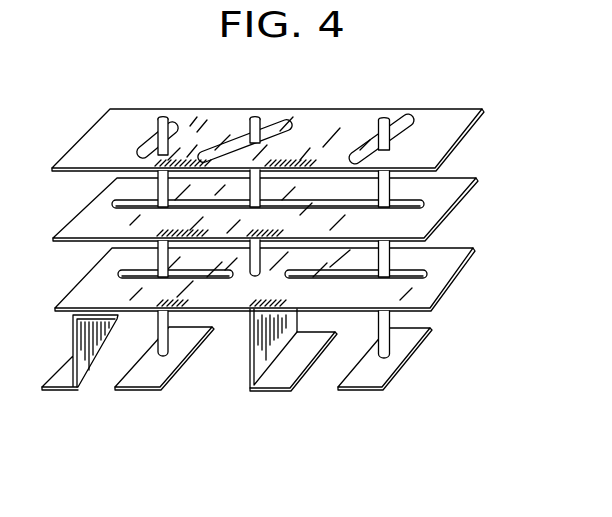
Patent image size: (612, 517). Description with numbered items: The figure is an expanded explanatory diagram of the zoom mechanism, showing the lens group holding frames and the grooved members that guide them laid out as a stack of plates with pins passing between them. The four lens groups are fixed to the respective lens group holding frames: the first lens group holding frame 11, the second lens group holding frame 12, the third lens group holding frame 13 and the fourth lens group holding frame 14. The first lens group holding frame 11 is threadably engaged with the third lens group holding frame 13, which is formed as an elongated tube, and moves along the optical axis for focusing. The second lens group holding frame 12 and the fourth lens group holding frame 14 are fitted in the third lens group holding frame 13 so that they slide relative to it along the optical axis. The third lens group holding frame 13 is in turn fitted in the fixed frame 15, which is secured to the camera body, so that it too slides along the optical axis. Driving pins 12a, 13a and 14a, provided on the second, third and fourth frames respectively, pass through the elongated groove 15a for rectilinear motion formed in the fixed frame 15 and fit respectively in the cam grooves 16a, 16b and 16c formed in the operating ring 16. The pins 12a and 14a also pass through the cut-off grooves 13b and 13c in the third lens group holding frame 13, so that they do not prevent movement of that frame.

The first lens group holding frame 11 is at (62, 380).
The second lens group holding frame 12 is at (147, 375).
The driving pin 12a is at (168, 352).
The third lens group holding frame 13 is at (287, 375).
The driving pin 13a is at (247, 277).
The cut-off groove 13b is at (115, 273).
The cut-off groove 13c is at (425, 269).
The fourth lens group holding frame 14 is at (387, 372).
The driving pin 14a is at (388, 340).
The fixed frame 15 is at (456, 196).
The elongated groove 15a is at (418, 200).
The operating ring 16 is at (466, 112).
The cam groove 16a is at (152, 147).
The cam groove 16b is at (278, 123).
The cam groove 16c is at (402, 120).